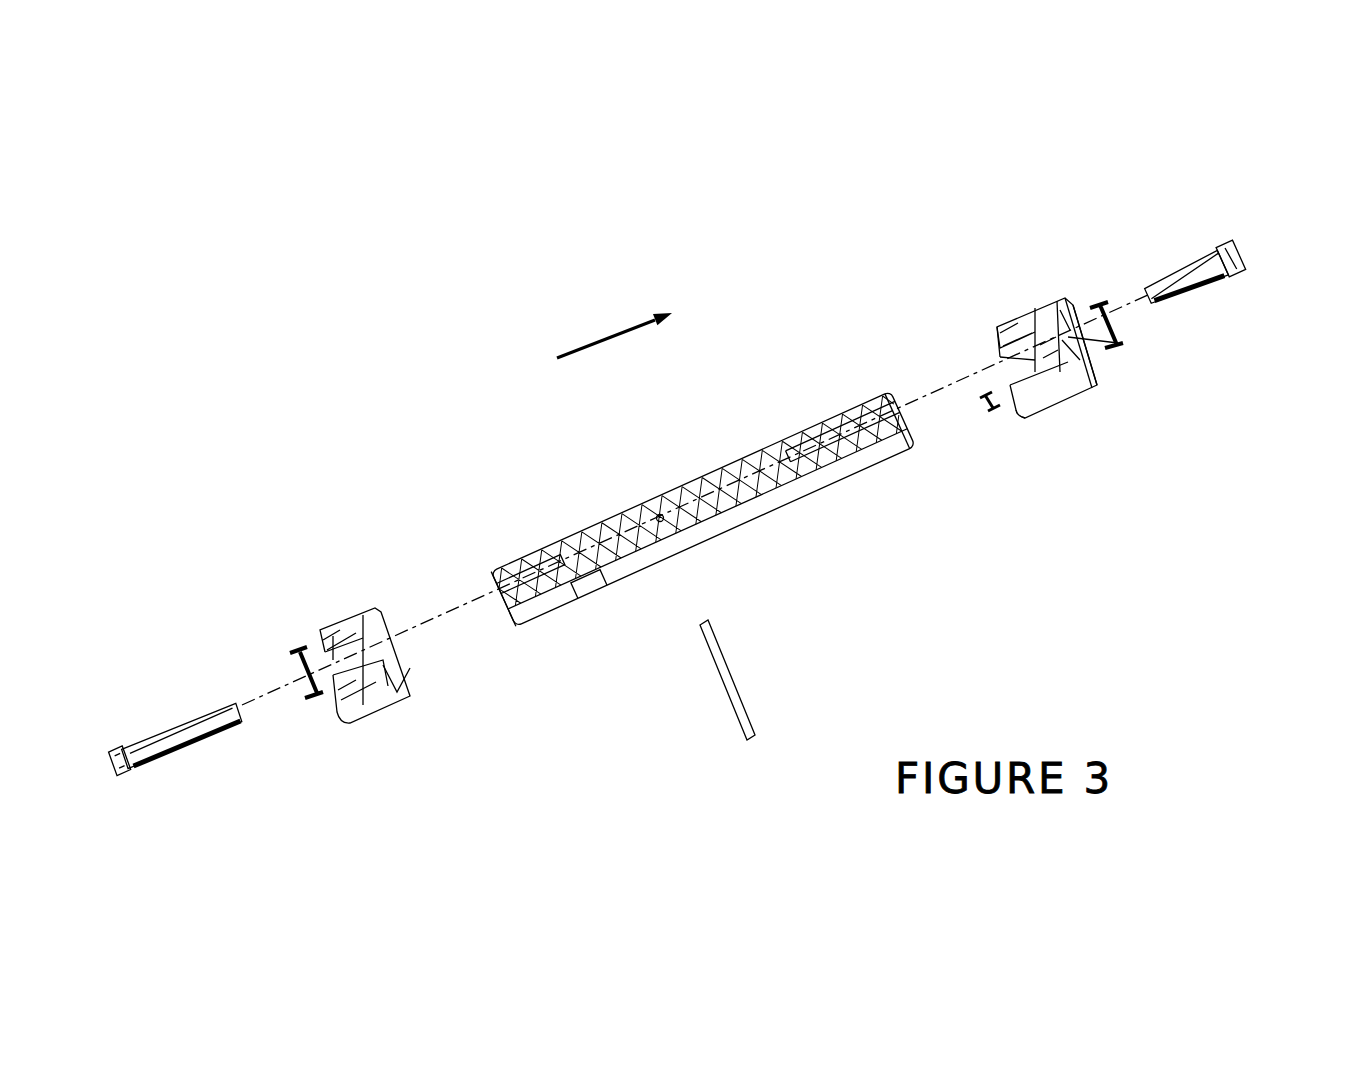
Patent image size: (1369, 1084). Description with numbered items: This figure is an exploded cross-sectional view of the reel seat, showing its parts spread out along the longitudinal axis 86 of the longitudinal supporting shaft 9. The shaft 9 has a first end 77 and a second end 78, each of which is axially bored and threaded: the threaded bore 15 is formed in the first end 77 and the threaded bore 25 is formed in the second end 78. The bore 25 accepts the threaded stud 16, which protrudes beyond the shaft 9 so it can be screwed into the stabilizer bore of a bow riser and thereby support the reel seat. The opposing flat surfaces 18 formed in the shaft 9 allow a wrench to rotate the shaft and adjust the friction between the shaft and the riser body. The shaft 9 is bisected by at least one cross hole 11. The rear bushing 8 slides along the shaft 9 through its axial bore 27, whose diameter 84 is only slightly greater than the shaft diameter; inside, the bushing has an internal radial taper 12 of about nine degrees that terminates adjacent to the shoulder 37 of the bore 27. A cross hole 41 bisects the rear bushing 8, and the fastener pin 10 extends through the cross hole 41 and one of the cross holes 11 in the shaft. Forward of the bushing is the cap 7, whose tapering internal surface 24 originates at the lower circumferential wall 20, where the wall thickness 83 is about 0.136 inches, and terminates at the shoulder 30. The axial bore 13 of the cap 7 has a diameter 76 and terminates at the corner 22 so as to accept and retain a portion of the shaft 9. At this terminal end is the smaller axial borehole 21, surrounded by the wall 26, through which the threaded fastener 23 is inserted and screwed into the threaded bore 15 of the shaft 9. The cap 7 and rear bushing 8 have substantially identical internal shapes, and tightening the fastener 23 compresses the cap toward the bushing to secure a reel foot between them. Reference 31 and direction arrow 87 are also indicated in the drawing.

The cap 7 is at (1111, 380).
The rear bushing 8 is at (371, 621).
The longitudinal supporting shaft 9 is at (693, 519).
The fastener pin 10 is at (722, 678).
The cross hole 11 is at (657, 514).
The internal radial taper 12 is at (382, 660).
The axial bore 13 is at (1040, 327).
The threaded bore 15 is at (838, 446).
The threaded stud 16 is at (130, 742).
The flat surfaces 18 is at (588, 588).
The lower circumferential wall 20 is at (1021, 413).
The axial borehole 21 is at (1072, 334).
The corner 22 is at (1077, 358).
The threaded fastener 23 is at (1242, 273).
The internal surface 24 is at (1013, 337).
The threaded bore 25 is at (530, 584).
The wall 26 is at (1068, 322).
The axial bore 27 is at (337, 648).
The shoulder 30 is at (1022, 338).
The channel opening 31 is at (1022, 378).
The shoulder 37 is at (390, 642).
The cross hole 41 is at (364, 722).
The diameter 76 is at (1122, 335).
The first end 77 is at (900, 397).
The second end 78 is at (509, 565).
The wall thickness 83 is at (987, 401).
The diameter 84 is at (298, 666).
The longitudinal axis 86 is at (443, 612).
The direction arrow 87 is at (617, 330).